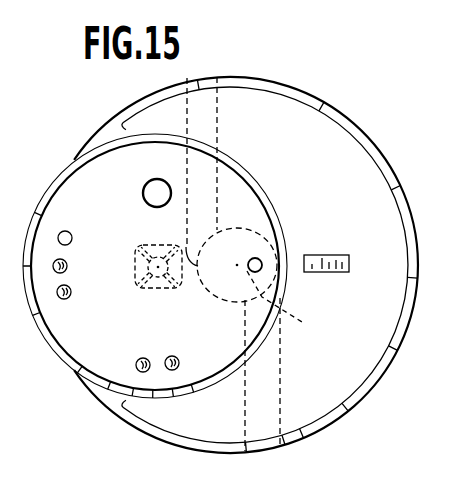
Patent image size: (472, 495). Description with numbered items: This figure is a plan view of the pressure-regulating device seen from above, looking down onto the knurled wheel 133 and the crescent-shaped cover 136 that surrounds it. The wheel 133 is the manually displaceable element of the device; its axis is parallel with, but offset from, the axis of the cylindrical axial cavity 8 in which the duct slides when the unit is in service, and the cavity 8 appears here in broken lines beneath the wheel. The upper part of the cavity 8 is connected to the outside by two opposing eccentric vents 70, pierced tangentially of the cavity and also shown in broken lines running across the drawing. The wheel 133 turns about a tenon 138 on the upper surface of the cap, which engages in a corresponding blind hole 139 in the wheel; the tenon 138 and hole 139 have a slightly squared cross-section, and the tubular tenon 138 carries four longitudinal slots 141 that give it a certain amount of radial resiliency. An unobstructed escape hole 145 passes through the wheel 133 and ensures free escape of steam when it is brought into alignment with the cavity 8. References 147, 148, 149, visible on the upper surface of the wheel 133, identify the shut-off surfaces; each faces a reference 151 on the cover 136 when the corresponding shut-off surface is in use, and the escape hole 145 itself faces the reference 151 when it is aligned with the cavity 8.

The cylindrical axial cavity 8 is at (283, 305).
The eccentric vents 70 is at (212, 127).
The knurled wheel 133 is at (84, 198).
The crescent-shaped cover 136 is at (351, 160).
The tenon 138 is at (136, 258).
The blind hole 139 is at (167, 243).
The longitudinal slots 141 is at (135, 288).
The escape hole 145 is at (143, 182).
The reference 147 is at (263, 250).
The reference 148 is at (156, 353).
The reference 149 is at (76, 260).
The reference 151 is at (333, 255).